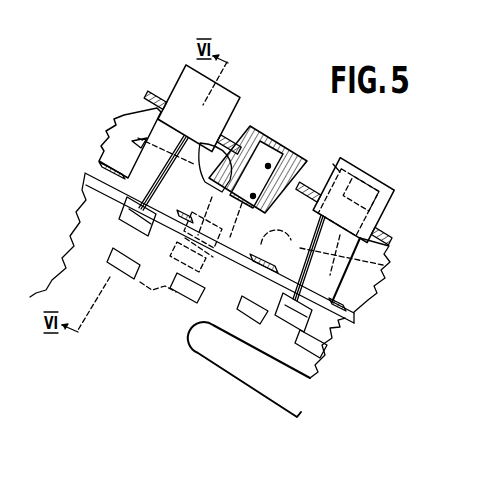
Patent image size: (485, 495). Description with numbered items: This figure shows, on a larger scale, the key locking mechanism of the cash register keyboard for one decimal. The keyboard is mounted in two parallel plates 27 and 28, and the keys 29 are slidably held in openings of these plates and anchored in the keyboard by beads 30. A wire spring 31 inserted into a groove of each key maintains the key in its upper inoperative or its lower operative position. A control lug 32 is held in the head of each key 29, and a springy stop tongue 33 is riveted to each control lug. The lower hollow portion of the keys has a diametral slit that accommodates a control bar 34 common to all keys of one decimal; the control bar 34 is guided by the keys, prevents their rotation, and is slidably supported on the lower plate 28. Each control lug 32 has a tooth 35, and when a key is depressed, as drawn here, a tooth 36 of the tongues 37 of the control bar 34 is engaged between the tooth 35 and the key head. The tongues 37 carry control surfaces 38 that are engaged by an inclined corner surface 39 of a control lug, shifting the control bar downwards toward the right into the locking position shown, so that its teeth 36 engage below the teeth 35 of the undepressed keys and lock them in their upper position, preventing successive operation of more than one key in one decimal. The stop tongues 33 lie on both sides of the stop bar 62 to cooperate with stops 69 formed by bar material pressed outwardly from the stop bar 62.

The parallel plate 27 is at (397, 246).
The lower plate 28 is at (355, 314).
The key 29 is at (258, 133).
The bead 30 is at (123, 203).
The wire spring 31 is at (340, 270).
The control lug 32 is at (290, 152).
The springy stop tongue 33 is at (130, 222).
The control bar 34 is at (114, 119).
The tooth 35 is at (220, 190).
The tooth 36 is at (205, 150).
The tongue 37 is at (228, 148).
The control surface 38 is at (146, 100).
The inclined corner surface 39 is at (370, 268).
The stop bar 62 is at (330, 328).
The stop 69 is at (150, 288).